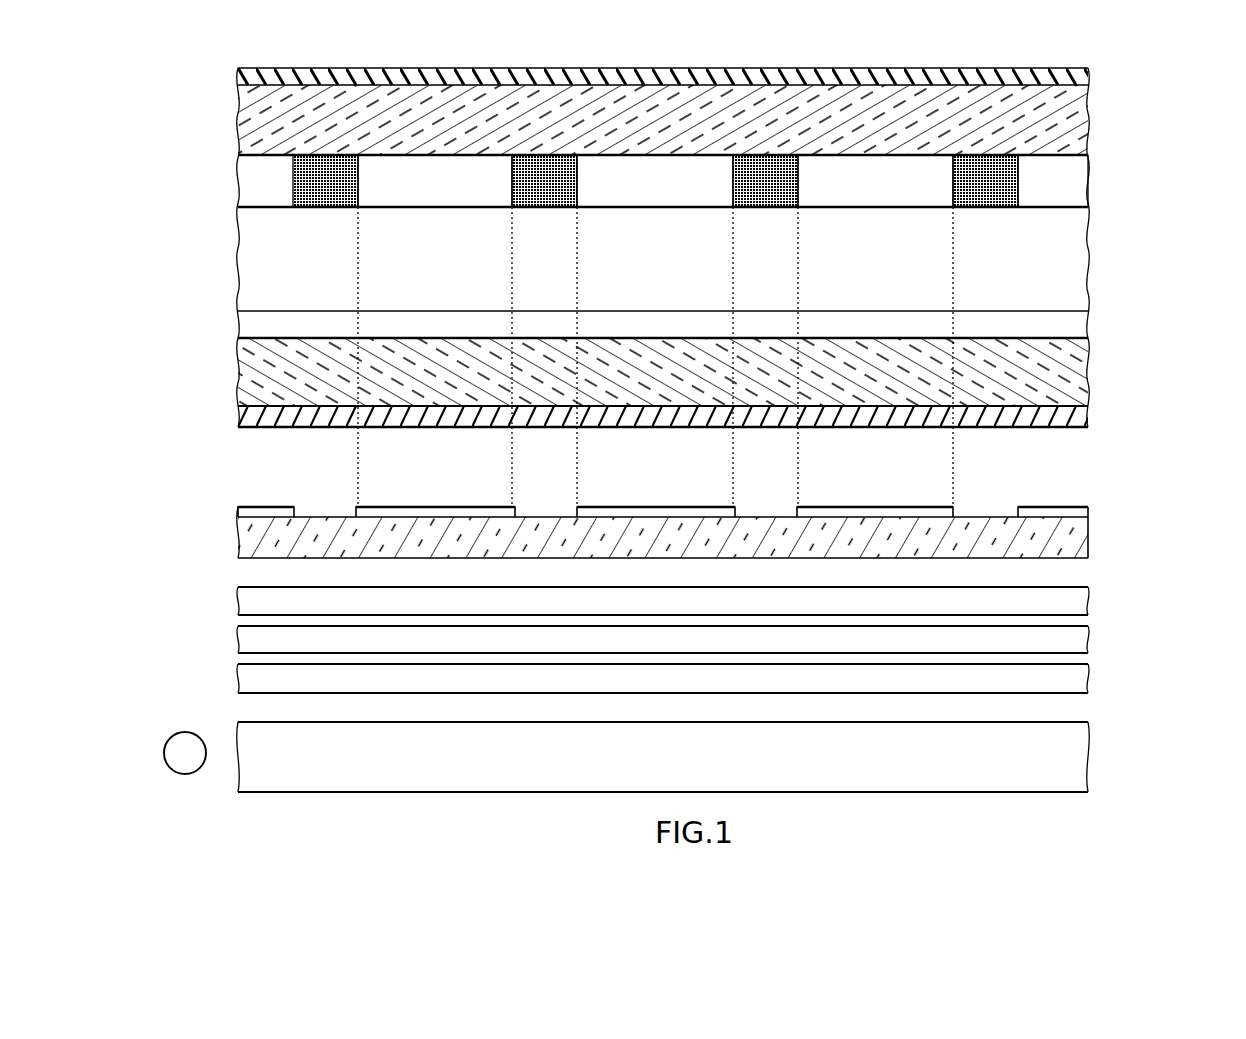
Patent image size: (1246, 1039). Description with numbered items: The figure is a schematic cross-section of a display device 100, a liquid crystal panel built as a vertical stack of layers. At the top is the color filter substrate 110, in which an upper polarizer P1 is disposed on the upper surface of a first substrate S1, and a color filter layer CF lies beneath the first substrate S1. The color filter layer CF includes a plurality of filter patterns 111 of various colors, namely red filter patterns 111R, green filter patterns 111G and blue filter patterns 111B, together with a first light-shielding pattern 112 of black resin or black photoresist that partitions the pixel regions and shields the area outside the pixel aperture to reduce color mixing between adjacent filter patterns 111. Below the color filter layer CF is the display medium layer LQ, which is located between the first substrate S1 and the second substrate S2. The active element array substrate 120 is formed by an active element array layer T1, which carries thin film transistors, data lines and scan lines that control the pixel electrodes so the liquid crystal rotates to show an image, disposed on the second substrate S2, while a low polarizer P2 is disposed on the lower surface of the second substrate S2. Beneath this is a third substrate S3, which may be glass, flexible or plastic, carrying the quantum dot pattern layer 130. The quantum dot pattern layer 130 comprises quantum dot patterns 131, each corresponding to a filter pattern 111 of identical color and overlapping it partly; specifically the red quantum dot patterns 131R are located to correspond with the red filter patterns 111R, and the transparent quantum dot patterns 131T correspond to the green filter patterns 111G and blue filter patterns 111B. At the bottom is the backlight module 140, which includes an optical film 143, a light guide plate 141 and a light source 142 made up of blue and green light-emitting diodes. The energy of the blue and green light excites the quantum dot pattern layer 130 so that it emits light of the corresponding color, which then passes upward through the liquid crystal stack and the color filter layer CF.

The display device 100 is at (202, 92).
The color filter substrate 110 is at (1158, 128).
The filter patterns 111 is at (943, 128).
The red filter patterns 111R is at (400, 188).
The green filter patterns 111G is at (666, 186).
The blue filter patterns 111B is at (921, 186).
The first light-shielding pattern 112 is at (985, 172).
The active element array substrate 120 is at (1160, 353).
The quantum dot pattern layer 130 is at (1097, 509).
The quantum dot pattern 131 is at (953, 473).
The transparent quantum dot pattern 131T is at (273, 513).
The red quantum dot pattern 131R is at (438, 514).
The backlight module 140 is at (1168, 714).
The light guide plate 141 is at (1082, 758).
The light source 142 is at (179, 742).
The optical film 143 is at (1095, 589).
The upper polarizer P1 is at (1088, 80).
The first substrate S1 is at (1086, 104).
The color filter layer CF is at (1097, 184).
The display medium layer LQ is at (1083, 258).
The active element array layer T1 is at (1083, 325).
The second substrate S2 is at (1085, 370).
The low polarizer P2 is at (1085, 418).
The third substrate S3 is at (1085, 540).